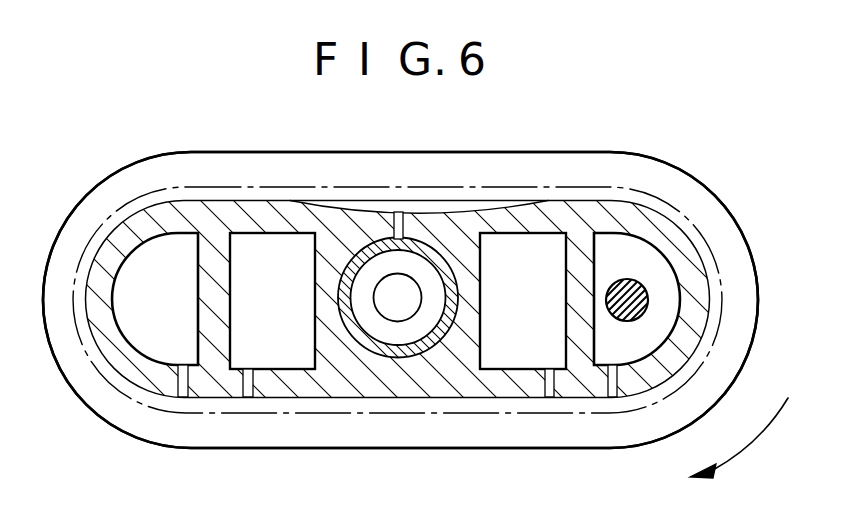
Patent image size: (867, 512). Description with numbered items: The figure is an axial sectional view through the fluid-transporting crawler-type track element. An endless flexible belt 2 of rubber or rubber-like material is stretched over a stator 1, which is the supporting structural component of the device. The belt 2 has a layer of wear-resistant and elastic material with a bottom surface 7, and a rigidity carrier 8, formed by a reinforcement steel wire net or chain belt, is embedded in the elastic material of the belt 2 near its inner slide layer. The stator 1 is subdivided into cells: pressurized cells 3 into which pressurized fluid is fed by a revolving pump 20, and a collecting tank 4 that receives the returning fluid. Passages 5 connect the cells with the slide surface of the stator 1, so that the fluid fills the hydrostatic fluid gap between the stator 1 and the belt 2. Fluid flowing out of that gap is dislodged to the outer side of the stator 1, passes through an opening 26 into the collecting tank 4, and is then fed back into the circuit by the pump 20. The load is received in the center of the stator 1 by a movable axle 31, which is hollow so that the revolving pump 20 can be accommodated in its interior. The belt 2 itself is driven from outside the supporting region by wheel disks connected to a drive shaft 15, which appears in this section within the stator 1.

The stator 1 is at (534, 393).
The endless flexible belt 2 is at (465, 433).
The pressurized cell 3 is at (278, 353).
The collecting tank 4 is at (442, 292).
The passage 5 is at (182, 385).
The bottom surface 7 is at (565, 452).
The rigidity carrier 8 is at (637, 415).
The drive shaft 15 is at (612, 297).
The revolving pump 20 is at (383, 294).
The opening 26 is at (398, 222).
The movable axle 31 is at (347, 320).